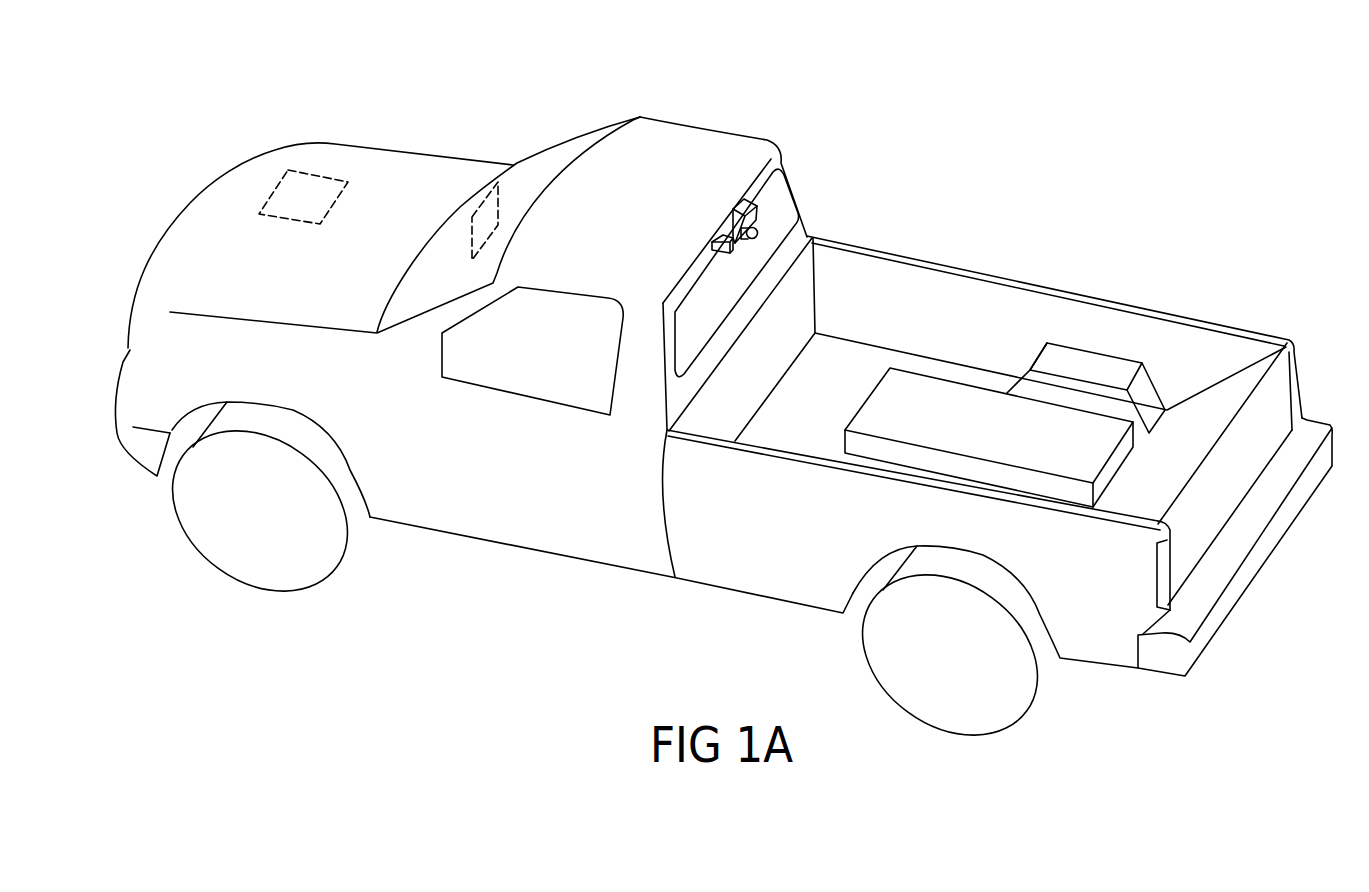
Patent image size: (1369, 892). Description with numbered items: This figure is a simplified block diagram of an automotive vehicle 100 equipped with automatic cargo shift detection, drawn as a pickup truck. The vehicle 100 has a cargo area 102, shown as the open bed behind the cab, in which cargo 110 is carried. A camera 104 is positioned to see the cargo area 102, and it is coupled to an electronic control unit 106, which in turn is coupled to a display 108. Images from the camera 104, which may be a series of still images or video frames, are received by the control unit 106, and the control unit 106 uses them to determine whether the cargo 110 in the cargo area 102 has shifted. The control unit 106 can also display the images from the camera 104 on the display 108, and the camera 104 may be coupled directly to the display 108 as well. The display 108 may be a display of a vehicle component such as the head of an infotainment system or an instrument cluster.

The automotive vehicle 100 is at (955, 148).
The cargo area 102 is at (1173, 372).
The camera 104 is at (738, 213).
The electronic control unit 106 is at (321, 174).
The display 108 is at (487, 202).
The cargo 110 is at (1058, 440).